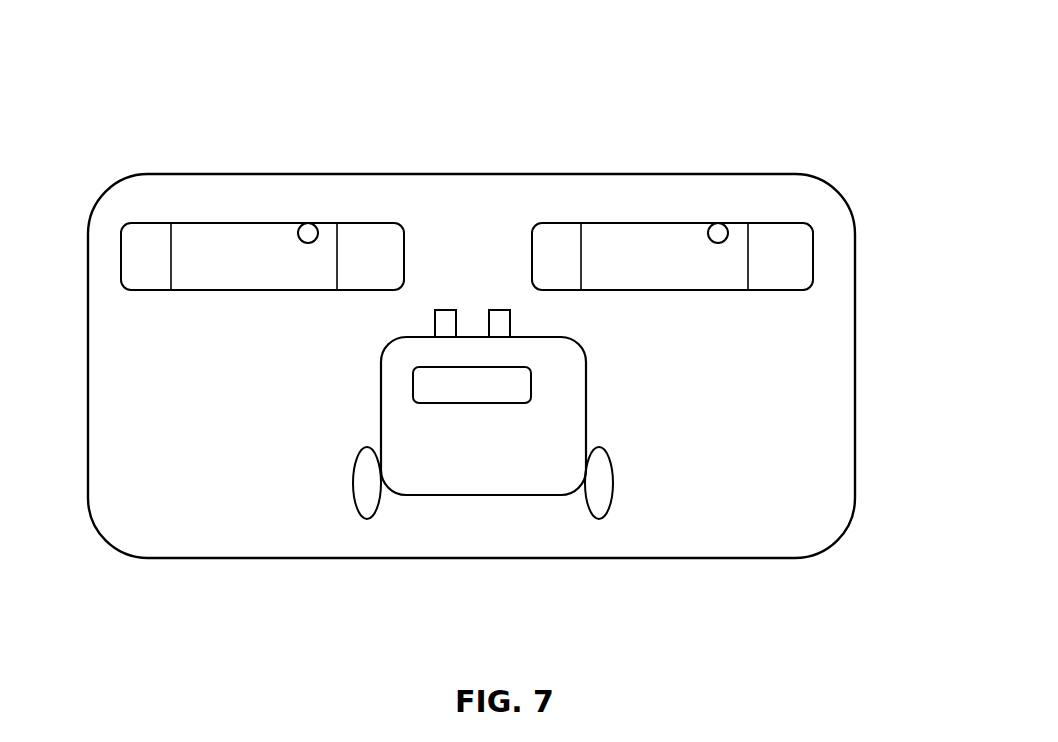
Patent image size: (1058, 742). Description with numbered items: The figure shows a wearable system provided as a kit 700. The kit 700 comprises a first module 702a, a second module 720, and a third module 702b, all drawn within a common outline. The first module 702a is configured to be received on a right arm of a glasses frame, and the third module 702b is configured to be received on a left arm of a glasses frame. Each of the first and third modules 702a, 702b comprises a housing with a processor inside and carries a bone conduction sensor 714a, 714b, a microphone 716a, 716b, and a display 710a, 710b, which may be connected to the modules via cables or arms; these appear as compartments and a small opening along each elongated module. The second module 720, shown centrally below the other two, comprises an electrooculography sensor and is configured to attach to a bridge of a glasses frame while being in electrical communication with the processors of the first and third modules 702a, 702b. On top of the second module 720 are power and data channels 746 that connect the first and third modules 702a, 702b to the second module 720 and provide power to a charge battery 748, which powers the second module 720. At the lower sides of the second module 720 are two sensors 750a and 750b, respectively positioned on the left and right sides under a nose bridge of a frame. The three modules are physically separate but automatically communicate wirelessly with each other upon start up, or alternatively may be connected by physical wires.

The kit 700 is at (495, 52).
The first module 702a is at (240, 222).
The third module 702b is at (645, 222).
The bone conduction sensor 714a is at (143, 245).
The bone conduction sensor 714b is at (552, 245).
The microphone 716a is at (307, 223).
The microphone 716b is at (718, 223).
The display 710a is at (388, 238).
The display 710b is at (790, 253).
The second module 720 is at (487, 465).
The power and data channels 746 is at (445, 333).
The charge battery 748 is at (437, 382).
The sensor 750a is at (368, 483).
The sensor 750b is at (598, 485).